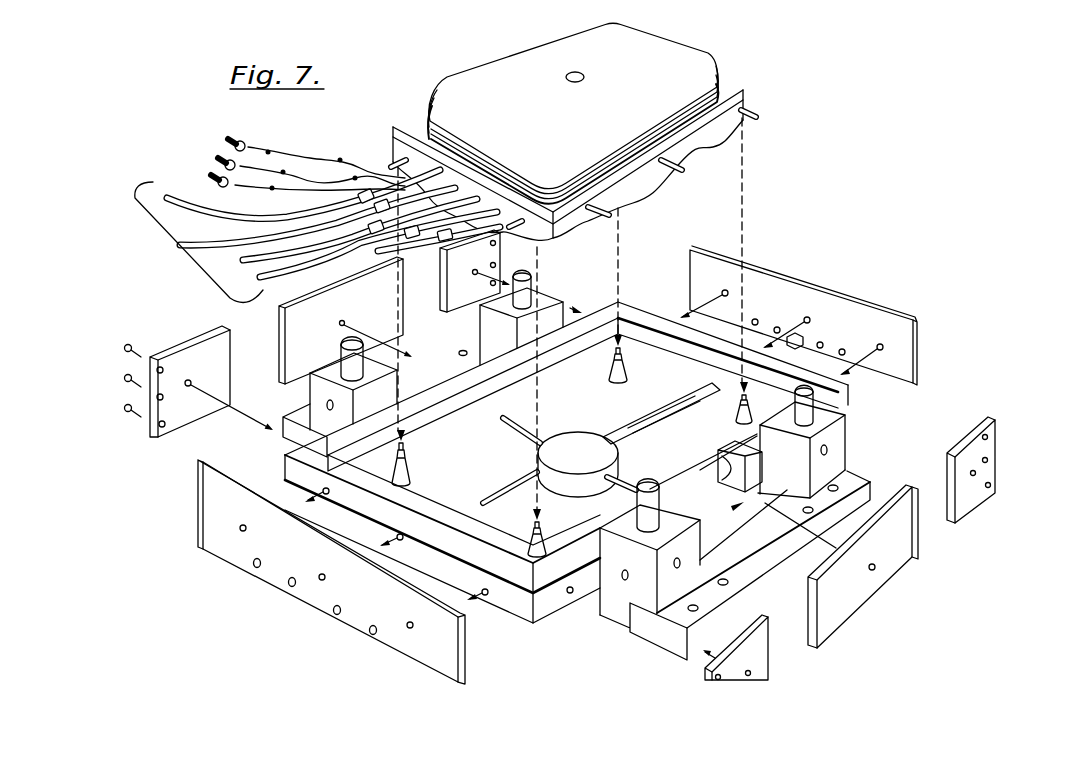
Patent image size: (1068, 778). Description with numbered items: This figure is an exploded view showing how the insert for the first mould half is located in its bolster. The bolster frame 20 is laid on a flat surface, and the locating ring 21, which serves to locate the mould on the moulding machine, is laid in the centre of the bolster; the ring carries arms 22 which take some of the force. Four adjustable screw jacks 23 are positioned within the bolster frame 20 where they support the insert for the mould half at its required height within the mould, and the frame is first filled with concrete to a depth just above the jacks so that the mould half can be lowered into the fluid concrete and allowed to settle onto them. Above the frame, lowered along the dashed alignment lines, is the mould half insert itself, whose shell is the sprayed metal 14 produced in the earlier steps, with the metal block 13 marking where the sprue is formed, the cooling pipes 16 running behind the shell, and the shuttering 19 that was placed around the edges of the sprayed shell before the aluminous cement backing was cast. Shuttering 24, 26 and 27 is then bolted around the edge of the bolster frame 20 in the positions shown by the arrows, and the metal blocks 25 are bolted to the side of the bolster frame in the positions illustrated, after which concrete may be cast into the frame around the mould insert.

The metal block 13 is at (564, 74).
The sprayed metal shell 14 is at (705, 72).
The cooling pipes 16 is at (182, 252).
The shuttering 19 is at (694, 150).
The bolster frame 20 is at (552, 580).
The locating ring 21 is at (570, 443).
The arms 22 is at (508, 493).
The adjustable screw jacks 23 is at (410, 473).
The shuttering 24 is at (847, 297).
The metal blocks 25 is at (547, 302).
The shuttering 26 is at (198, 358).
The shuttering 27 is at (298, 333).